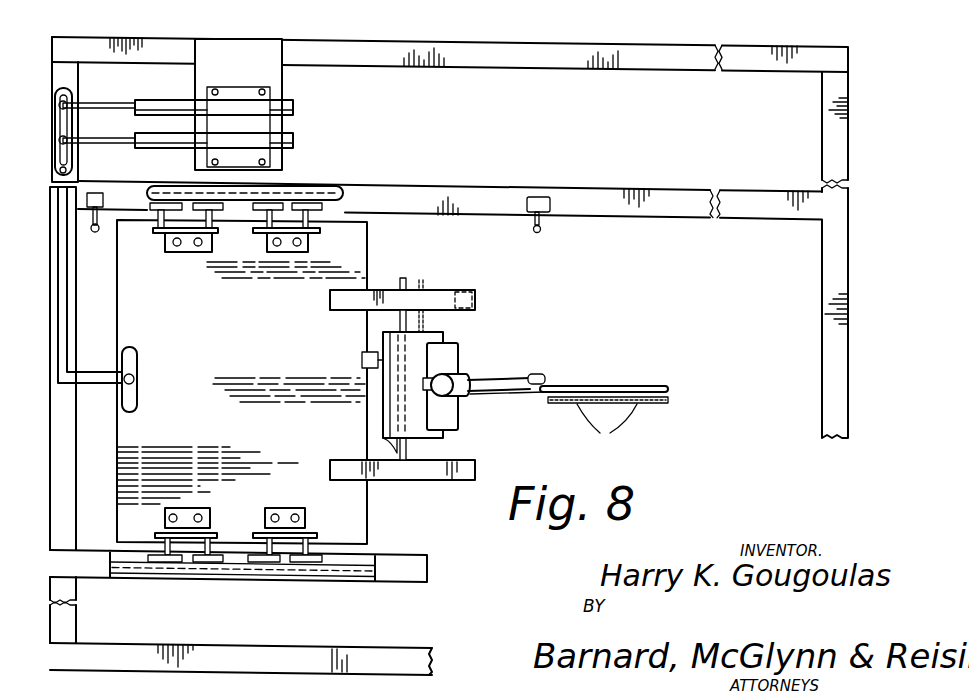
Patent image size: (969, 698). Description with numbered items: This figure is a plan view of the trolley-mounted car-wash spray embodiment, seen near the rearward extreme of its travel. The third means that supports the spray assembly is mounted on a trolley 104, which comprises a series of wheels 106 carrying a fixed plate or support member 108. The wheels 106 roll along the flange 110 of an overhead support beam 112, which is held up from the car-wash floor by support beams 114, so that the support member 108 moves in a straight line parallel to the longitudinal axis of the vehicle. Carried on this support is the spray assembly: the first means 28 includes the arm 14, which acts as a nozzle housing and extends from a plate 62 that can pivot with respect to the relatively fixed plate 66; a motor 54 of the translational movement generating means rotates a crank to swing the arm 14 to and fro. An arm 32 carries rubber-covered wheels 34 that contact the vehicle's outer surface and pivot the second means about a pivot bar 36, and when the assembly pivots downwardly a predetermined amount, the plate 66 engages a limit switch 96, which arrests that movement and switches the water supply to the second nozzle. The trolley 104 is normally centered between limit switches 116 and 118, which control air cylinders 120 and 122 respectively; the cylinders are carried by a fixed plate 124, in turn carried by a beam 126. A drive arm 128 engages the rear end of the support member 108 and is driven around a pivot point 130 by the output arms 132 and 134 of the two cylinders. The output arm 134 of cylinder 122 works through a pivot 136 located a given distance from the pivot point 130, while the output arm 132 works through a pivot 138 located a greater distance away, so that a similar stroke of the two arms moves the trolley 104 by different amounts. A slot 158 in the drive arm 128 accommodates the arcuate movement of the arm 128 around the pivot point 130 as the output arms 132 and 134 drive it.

The arm 14 is at (517, 381).
The first means 28 is at (589, 346).
The arm 32 is at (611, 389).
The wheels 34 is at (607, 433).
The pivot bar 36 is at (392, 443).
The motor 54 is at (464, 400).
The plate 62 is at (448, 357).
The fixed plate 66 is at (435, 335).
The limit switch 96 is at (364, 360).
The trolley 104 is at (390, 284).
The wheels 106 is at (302, 192).
The support member 108 is at (370, 242).
The flange 110 is at (578, 220).
The overhead support beam 112 is at (650, 192).
The support beams 114 is at (822, 266).
The limit switch 116 is at (537, 196).
The limit switch 118 is at (87, 200).
The air cylinder 120 is at (296, 105).
The air cylinder 122 is at (296, 140).
The fixed plate 124 is at (258, 54).
The beam 126 is at (522, 61).
The drive arm 128 is at (74, 323).
The pivot point 130 is at (70, 170).
The output arm 132 is at (95, 104).
The output arm 134 is at (84, 140).
The pivot 136 is at (58, 147).
The pivot 138 is at (59, 102).
The slot 158 is at (55, 115).